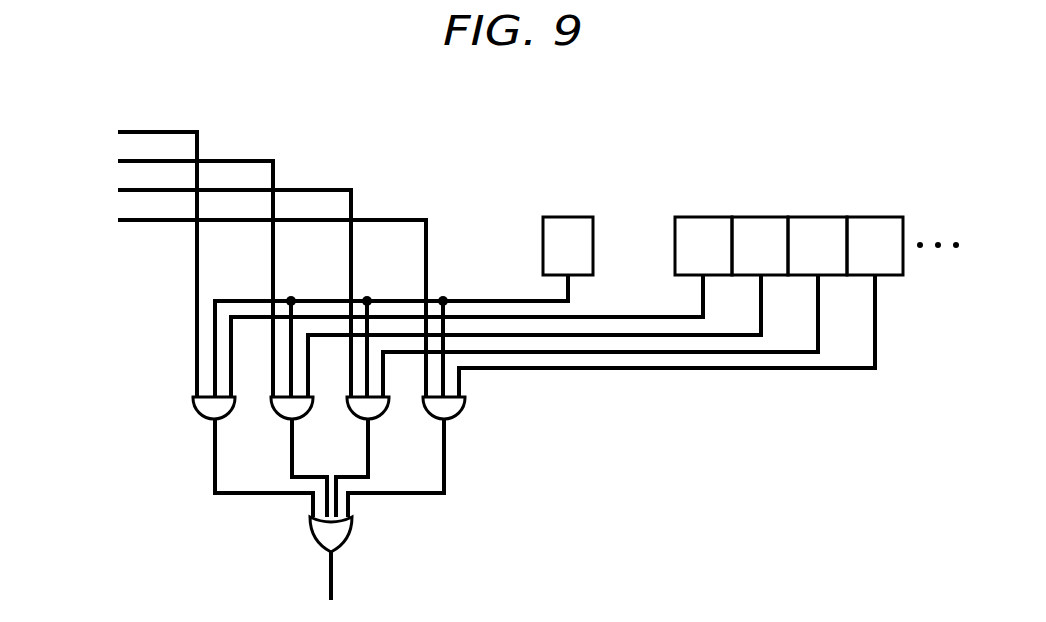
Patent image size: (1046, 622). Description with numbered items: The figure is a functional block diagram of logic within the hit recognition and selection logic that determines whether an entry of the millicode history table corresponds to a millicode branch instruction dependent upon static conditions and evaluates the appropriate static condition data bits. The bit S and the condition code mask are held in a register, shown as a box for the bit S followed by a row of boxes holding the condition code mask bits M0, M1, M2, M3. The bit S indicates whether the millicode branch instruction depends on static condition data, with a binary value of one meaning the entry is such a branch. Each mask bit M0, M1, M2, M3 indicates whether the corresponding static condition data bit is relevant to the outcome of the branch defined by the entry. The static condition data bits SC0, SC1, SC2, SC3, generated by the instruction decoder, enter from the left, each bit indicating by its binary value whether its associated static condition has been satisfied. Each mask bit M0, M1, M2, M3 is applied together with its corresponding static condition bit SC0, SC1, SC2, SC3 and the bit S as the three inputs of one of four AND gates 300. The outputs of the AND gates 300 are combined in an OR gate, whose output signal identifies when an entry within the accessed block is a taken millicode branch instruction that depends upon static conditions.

The AND gates 300 is at (329, 435).
The bit S is at (404, 307).
The condition code mask bit M0 is at (481, 307).
The condition code mask bit M1 is at (548, 307).
The condition code mask bit M2 is at (615, 307).
The condition code mask bit M3 is at (681, 307).
The static condition data bit SC0 is at (250, 301).
The static condition data bit SC1 is at (213, 286).
The static condition data bit SC2 is at (174, 271).
The static condition data bit SC3 is at (136, 257).